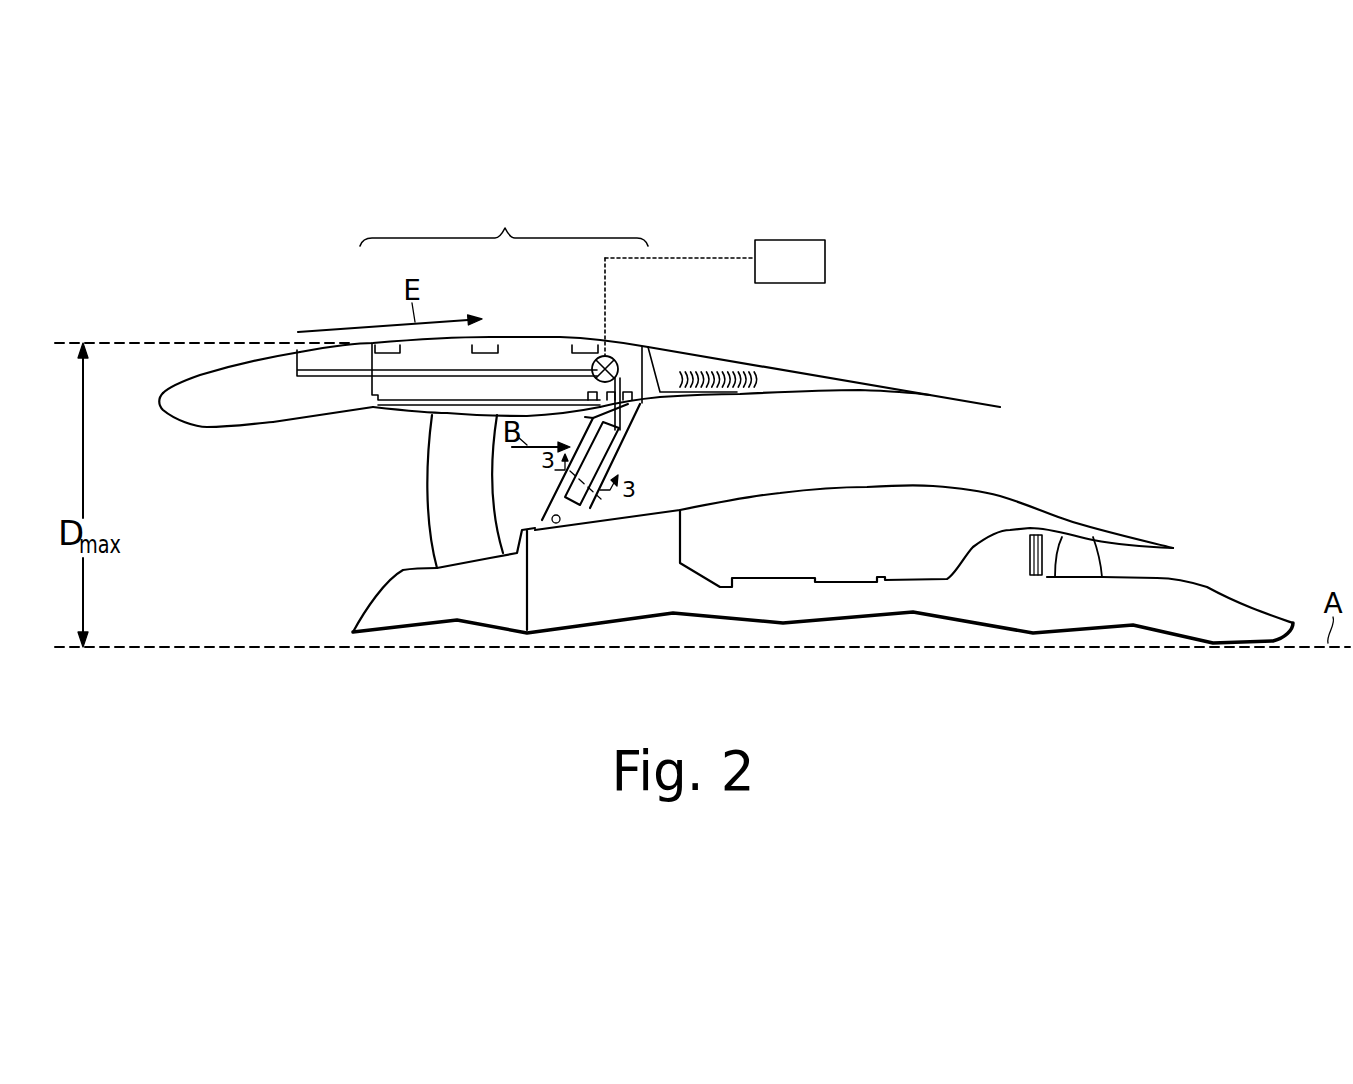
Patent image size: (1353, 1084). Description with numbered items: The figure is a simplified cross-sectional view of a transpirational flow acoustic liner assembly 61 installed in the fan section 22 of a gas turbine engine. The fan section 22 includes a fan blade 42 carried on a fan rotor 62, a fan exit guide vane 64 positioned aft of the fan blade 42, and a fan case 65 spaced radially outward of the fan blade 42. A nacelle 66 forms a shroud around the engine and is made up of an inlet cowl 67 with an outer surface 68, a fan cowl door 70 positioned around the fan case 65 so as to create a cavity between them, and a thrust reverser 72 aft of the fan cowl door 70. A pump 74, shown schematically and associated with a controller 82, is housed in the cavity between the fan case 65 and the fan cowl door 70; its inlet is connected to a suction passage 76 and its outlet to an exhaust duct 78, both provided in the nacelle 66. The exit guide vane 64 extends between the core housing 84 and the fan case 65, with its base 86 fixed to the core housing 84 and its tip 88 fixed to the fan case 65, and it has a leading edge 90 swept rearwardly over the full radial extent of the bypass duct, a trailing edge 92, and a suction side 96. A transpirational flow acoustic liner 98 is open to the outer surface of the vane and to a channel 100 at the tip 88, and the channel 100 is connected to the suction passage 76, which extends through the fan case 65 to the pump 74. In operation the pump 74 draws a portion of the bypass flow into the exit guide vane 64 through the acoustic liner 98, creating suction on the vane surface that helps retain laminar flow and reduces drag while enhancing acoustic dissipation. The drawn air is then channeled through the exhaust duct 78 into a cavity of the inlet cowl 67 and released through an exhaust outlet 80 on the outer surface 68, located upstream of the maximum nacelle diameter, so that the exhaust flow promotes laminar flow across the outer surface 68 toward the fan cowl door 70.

The fan section 22 is at (504, 221).
The fan blade 42 is at (445, 540).
The transpirational flow acoustic liner assembly 61 is at (632, 330).
The fan rotor 62 is at (388, 605).
The fan exit guide vane 64 is at (548, 507).
The fan case 65 is at (505, 410).
The nacelle 66 is at (271, 433).
The inlet cowl 67 is at (177, 407).
The outer surface 68 is at (257, 357).
The fan cowl door 70 is at (540, 352).
The thrust reverser 72 is at (713, 367).
The pump 74 is at (625, 355).
The suction passage 76 is at (660, 395).
The exhaust duct 78 is at (403, 373).
The exhaust outlet 80 is at (303, 350).
The controller 82 is at (776, 276).
The core housing 84 is at (700, 498).
The base 86 is at (549, 526).
The tip 88 is at (585, 417).
The leading edge 90 is at (553, 491).
The trailing edge 92 is at (682, 534).
The suction side 96 is at (613, 458).
The transpirational flow acoustic liner 98 is at (608, 447).
The channel 100 is at (608, 414).